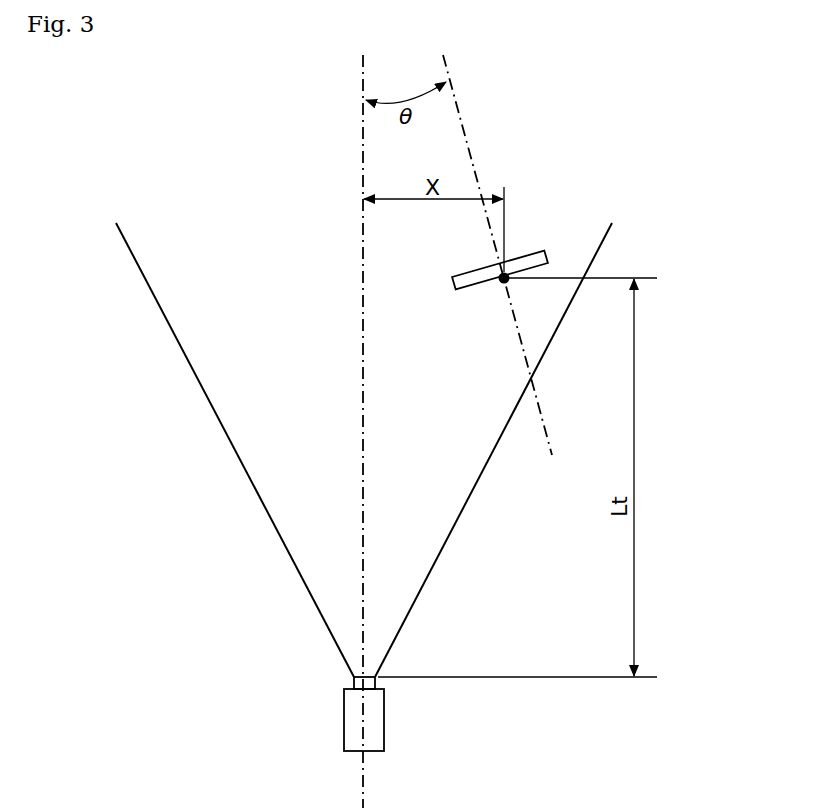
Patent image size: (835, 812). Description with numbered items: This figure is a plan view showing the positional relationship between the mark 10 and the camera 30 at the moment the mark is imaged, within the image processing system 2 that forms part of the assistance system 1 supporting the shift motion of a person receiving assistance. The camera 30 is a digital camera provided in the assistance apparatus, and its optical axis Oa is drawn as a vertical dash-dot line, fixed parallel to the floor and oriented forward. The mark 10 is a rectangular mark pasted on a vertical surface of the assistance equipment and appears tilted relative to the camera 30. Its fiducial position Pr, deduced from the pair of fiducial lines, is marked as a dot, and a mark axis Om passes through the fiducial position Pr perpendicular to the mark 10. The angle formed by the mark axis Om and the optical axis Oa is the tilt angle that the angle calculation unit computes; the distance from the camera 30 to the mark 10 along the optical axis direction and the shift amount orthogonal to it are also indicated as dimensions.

The assistance system 1 is at (710, 209).
The image processing system 2 is at (515, 431).
The mark 10 is at (529, 252).
The camera 30 is at (344, 720).
The optical axis Oa is at (358, 163).
The mark axis Om is at (472, 155).
The fiducial position Pr is at (500, 284).